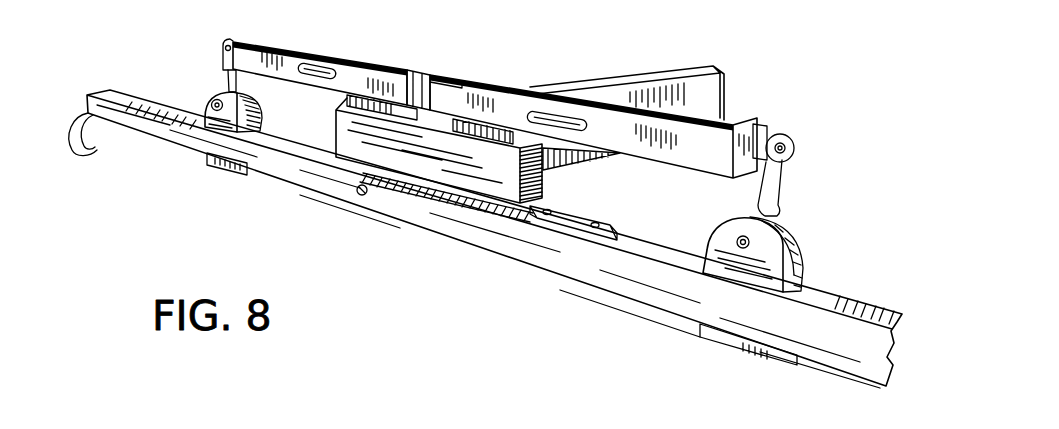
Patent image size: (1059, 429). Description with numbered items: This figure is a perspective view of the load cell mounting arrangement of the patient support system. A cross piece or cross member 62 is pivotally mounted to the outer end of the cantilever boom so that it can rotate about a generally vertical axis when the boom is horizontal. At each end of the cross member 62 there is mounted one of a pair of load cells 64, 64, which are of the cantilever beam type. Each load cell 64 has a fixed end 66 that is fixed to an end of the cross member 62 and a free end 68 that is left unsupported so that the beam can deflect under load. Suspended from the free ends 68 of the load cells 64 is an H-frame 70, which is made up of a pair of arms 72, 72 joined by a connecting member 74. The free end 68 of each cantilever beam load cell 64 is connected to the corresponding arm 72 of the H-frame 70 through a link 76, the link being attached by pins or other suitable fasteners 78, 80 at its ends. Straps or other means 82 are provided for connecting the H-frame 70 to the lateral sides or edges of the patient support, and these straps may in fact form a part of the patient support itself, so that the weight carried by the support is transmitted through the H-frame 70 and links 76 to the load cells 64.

The cross member 62 is at (670, 70).
The load cell 64 is at (333, 28).
The fixed end 66 is at (437, 78).
The free end 68 is at (244, 55).
The H-frame 70 is at (153, 91).
The arm 72 is at (313, 181).
The connecting member 74 is at (572, 170).
The link 76 is at (223, 56).
The pin 78 is at (787, 147).
The fastener 80 is at (205, 110).
The strap 82 is at (80, 160).